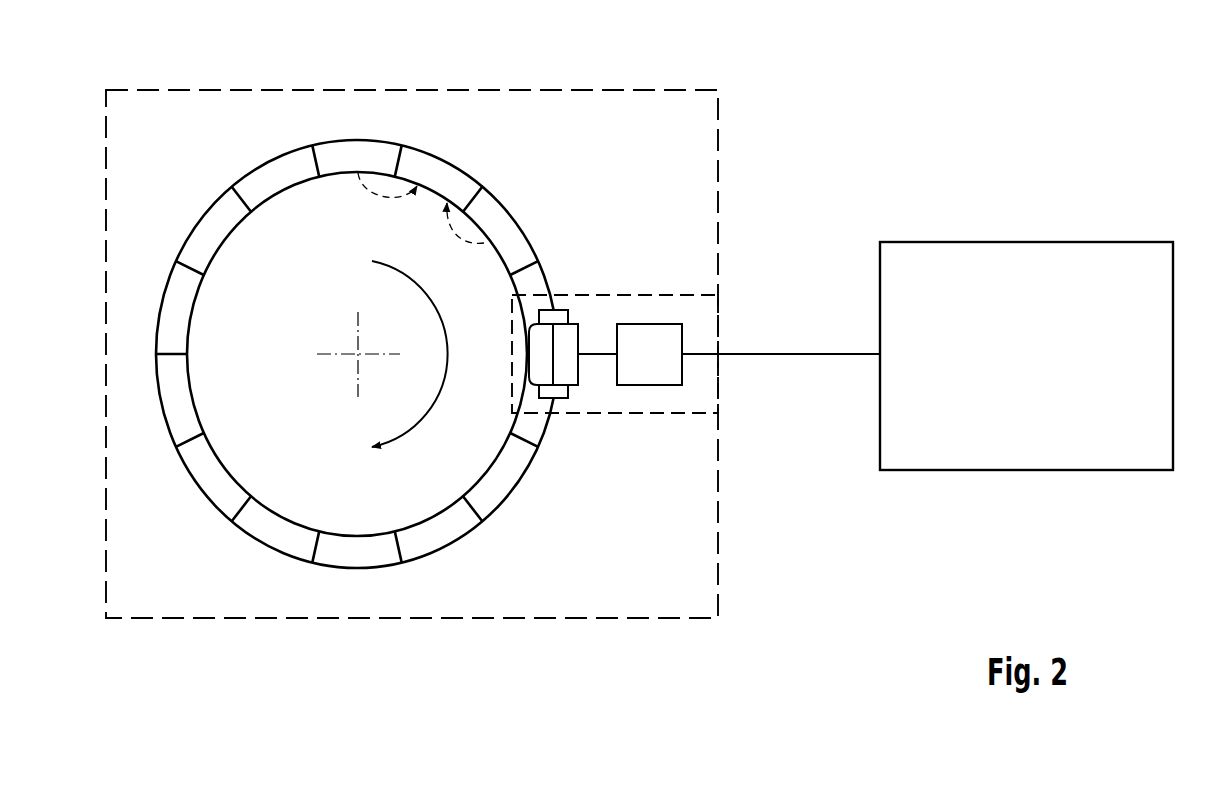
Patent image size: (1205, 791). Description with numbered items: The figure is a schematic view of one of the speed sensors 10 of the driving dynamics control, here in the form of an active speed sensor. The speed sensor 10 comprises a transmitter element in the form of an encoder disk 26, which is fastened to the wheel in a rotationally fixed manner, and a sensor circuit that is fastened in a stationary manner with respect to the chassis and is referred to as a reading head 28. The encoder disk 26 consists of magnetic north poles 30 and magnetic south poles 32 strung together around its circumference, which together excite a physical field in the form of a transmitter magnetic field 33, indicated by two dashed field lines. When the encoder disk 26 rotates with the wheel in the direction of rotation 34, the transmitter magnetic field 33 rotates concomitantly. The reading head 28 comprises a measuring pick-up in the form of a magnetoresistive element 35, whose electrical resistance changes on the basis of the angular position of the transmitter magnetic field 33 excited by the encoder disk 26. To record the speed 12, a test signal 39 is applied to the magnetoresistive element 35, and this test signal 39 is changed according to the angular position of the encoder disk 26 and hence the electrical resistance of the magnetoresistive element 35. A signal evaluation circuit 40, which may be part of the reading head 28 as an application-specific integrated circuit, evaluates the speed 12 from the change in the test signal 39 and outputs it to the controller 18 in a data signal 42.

The speed sensor 10 is at (453, 90).
The speed 12 is at (806, 290).
The controller 18 is at (1026, 242).
The encoder disk 26 is at (291, 130).
The reading head 28 is at (667, 415).
The magnetic north poles 30 is at (357, 138).
The magnetic south poles 32 is at (272, 157).
The transmitter magnetic field 33 is at (365, 187).
The direction of rotation 34 is at (452, 372).
The magnetoresistive element 35 is at (578, 340).
The test signal 39 is at (597, 357).
The signal evaluation circuit 40 is at (650, 324).
The data signal 42 is at (781, 357).